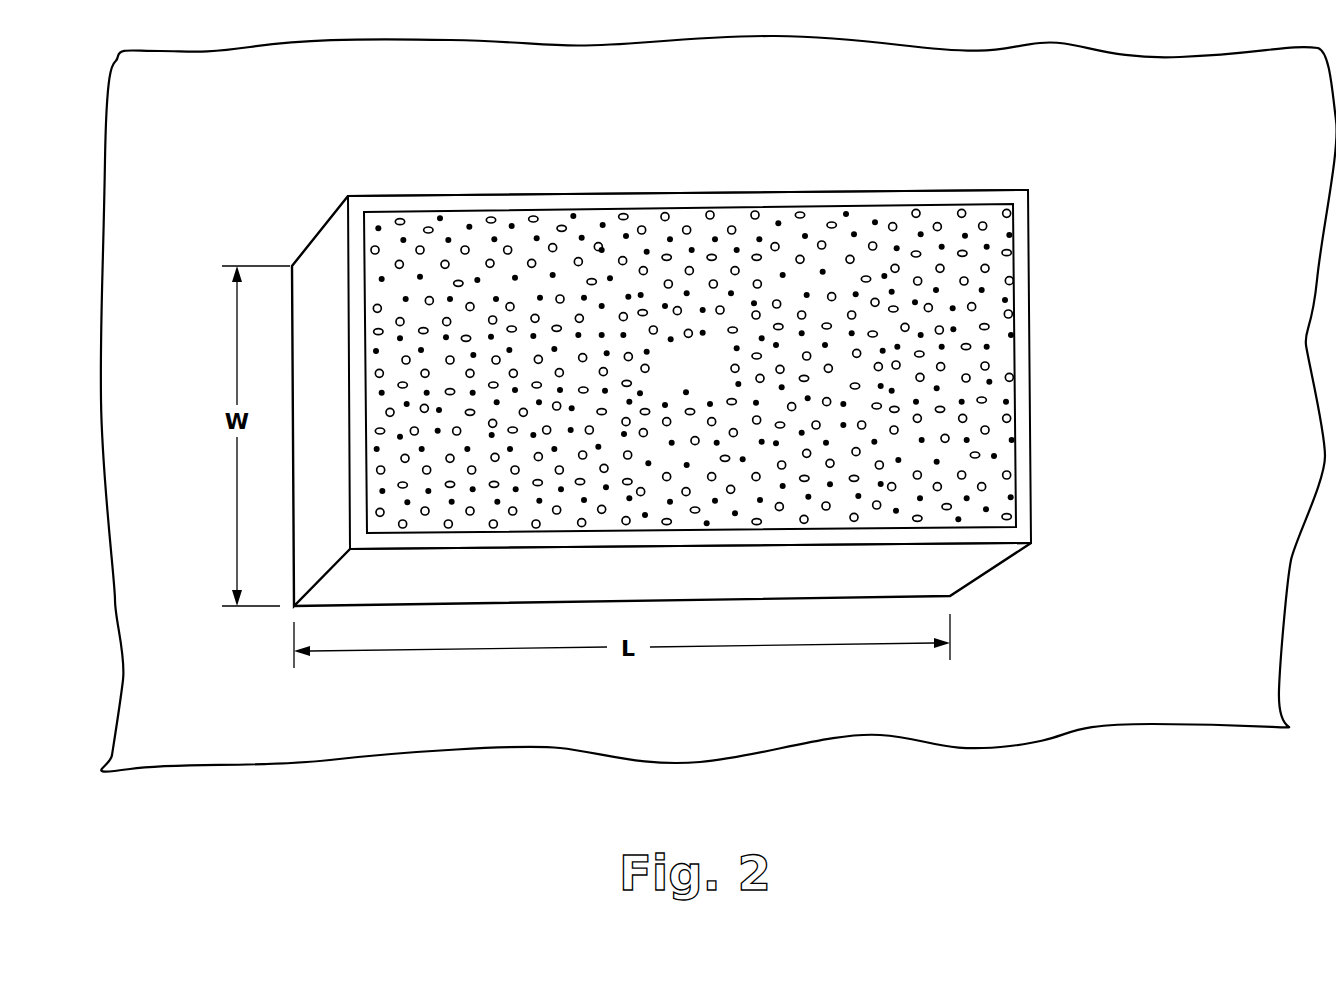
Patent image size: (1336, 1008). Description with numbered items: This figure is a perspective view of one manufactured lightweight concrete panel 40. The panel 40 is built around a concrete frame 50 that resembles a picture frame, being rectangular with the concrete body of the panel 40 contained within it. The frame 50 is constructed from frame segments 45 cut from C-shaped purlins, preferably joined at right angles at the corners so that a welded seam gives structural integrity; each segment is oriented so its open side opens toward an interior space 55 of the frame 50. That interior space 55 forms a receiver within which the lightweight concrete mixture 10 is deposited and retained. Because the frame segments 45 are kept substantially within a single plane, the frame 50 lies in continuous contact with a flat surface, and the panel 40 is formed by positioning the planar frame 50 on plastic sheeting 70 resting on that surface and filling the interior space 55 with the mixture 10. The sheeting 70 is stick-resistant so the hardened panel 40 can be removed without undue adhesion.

The lightweight concrete mixture 10 is at (684, 380).
The concrete panel 40 is at (405, 182).
The frame segments 45 is at (1013, 534).
The concrete frame 50 is at (1046, 227).
The interior space 55 is at (981, 371).
The plastic sheeting 70 is at (236, 138).